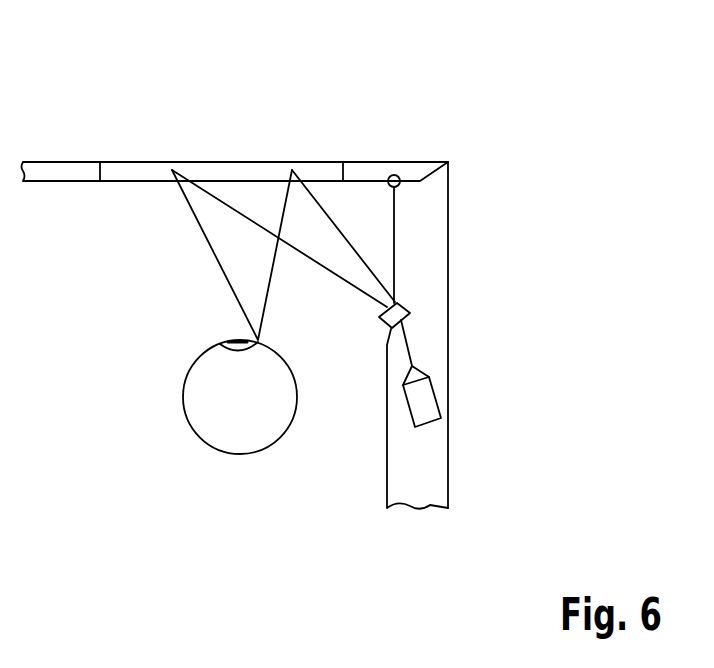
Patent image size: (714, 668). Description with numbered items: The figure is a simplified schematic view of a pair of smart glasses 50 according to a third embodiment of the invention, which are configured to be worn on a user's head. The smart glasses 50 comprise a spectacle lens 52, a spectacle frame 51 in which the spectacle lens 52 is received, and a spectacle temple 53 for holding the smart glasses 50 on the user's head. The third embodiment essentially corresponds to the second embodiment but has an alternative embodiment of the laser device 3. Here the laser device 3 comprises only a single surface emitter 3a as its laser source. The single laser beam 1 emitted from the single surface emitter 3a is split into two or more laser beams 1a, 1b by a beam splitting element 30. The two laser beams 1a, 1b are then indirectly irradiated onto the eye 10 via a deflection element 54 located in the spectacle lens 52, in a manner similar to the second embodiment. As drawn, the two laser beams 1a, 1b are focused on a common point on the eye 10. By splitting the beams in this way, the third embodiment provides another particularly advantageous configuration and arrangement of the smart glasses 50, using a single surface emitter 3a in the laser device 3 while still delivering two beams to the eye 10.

The smart glasses 50 is at (530, 95).
The spectacle frame 51 is at (61, 173).
The spectacle lens 52 is at (152, 173).
The deflection element 54 is at (257, 173).
The laser beam 1b is at (340, 212).
The laser beam 1a is at (326, 252).
The laser device 3 is at (604, 241).
The surface emitter 3a is at (457, 397).
The beam splitting element 30 is at (405, 305).
The laser beam 1 is at (397, 360).
The spectacle temple 53 is at (425, 462).
The eye 10 is at (172, 416).